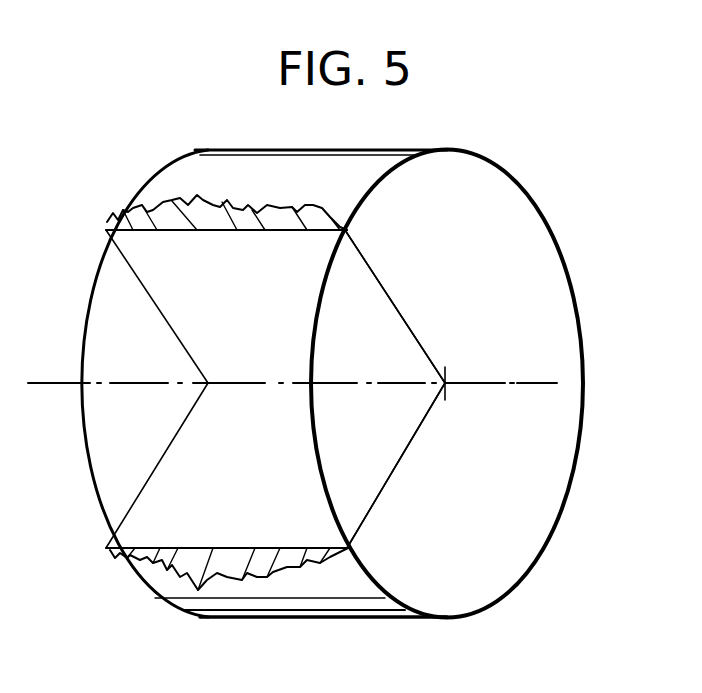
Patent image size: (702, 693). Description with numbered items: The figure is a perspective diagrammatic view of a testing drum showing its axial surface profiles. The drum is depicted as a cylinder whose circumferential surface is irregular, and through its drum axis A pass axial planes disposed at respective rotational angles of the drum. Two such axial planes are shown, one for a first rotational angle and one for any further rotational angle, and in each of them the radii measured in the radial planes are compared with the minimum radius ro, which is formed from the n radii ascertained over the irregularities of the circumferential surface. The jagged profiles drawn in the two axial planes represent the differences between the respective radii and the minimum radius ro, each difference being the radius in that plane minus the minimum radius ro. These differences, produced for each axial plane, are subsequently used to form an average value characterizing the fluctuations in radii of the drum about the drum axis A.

The drum axis A is at (532, 386).
The minimum radius ro is at (396, 389).